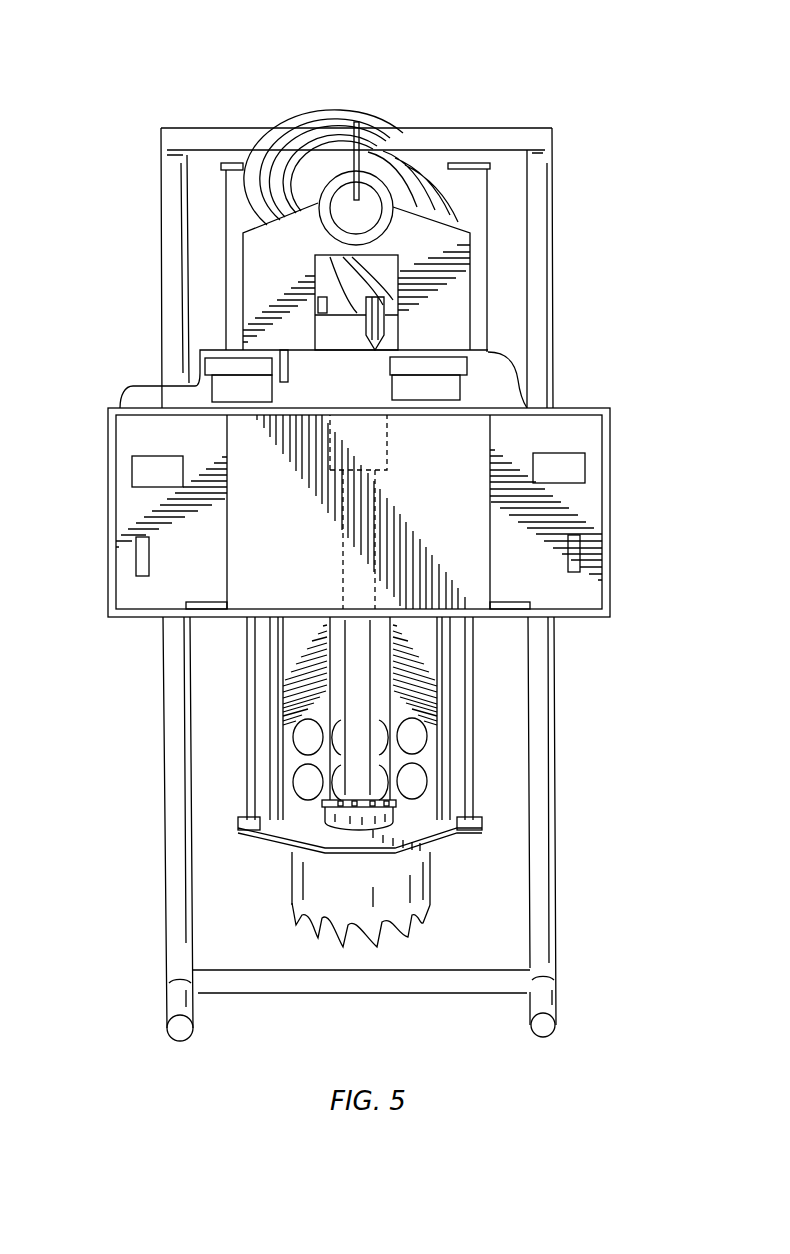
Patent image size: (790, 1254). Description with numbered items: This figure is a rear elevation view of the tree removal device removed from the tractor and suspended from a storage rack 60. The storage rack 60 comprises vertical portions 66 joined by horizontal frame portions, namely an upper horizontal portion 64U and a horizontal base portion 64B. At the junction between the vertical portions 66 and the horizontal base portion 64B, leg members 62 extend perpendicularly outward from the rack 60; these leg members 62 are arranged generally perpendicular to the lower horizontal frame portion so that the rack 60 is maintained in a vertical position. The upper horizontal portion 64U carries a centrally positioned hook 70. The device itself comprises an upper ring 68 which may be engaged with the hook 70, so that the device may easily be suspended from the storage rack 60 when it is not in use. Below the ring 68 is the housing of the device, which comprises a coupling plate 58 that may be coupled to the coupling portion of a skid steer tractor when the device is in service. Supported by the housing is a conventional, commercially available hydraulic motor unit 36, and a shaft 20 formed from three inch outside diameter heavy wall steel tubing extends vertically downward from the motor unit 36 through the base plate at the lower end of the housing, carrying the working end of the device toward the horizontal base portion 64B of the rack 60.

The storage rack 60 is at (196, 118).
The hook 70 is at (360, 138).
The upper ring 68 is at (380, 187).
The upper horizontal portion 64U is at (537, 145).
The coupling plate 58 is at (570, 435).
The motor unit 36 is at (357, 445).
The shaft 20 is at (357, 600).
The vertical portions 66 is at (540, 733).
The horizontal base portion 64B is at (485, 978).
The leg members 62 is at (543, 999).